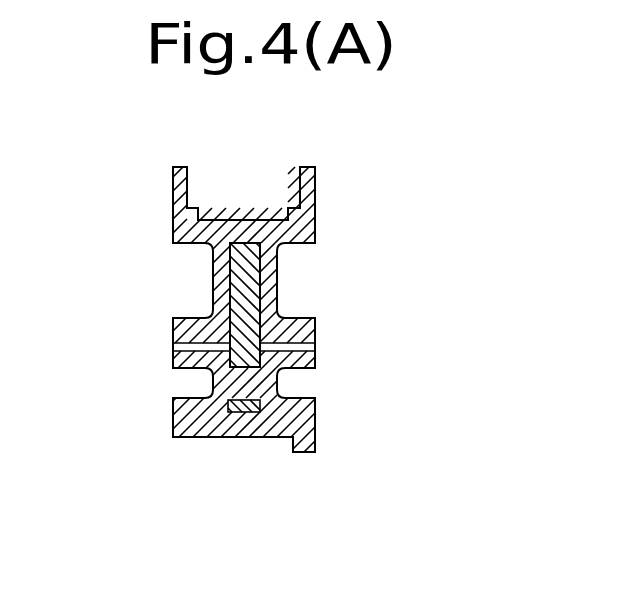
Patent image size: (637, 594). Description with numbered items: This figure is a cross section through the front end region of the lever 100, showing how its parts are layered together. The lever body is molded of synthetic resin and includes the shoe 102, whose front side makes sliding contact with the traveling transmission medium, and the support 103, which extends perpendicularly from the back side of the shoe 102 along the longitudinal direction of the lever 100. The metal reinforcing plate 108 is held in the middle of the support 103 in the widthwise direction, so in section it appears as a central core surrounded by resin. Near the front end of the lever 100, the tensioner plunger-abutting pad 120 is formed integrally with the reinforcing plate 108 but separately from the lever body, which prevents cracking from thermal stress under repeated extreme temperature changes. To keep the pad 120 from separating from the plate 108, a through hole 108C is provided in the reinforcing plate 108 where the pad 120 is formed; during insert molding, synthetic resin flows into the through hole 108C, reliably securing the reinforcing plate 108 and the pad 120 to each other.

The lever 100 is at (244, 472).
The shoe 102 is at (237, 223).
The support 103 is at (217, 273).
The metal reinforcing plate 108 is at (255, 302).
The through hole 108C is at (237, 393).
The tensioner plunger-abutting pad 120 is at (173, 413).